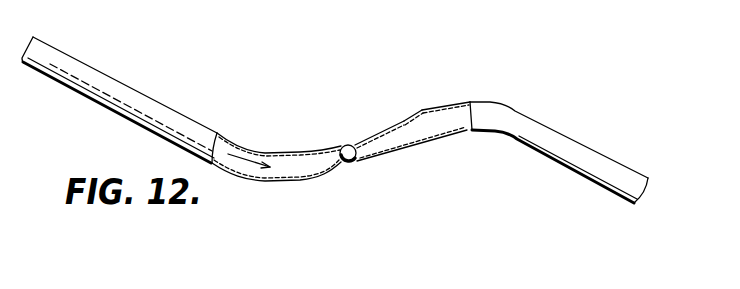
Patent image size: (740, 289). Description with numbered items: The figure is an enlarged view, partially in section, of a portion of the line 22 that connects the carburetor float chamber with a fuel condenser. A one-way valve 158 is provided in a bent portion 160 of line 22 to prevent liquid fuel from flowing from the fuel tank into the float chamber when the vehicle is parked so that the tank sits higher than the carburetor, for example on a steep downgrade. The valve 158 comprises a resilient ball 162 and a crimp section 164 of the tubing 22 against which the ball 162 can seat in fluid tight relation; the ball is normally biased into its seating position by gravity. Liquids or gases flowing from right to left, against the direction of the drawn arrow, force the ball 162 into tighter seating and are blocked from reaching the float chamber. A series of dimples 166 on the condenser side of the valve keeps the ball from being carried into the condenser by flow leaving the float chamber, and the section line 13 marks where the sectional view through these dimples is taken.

The line 22 is at (535, 122).
The one-way valve 158 is at (345, 183).
The bent portion 160 is at (379, 131).
The resilient ball 162 is at (356, 164).
The crimp section 164 is at (337, 147).
The dimples 166 is at (409, 131).
The section line 13 is at (409, 106).